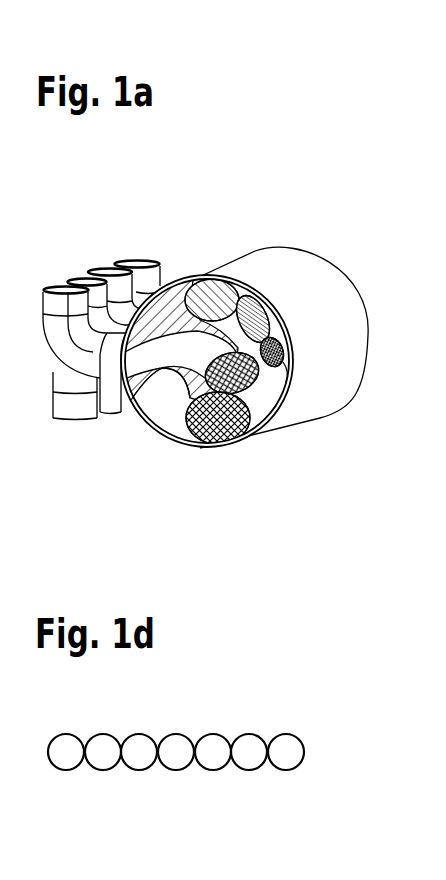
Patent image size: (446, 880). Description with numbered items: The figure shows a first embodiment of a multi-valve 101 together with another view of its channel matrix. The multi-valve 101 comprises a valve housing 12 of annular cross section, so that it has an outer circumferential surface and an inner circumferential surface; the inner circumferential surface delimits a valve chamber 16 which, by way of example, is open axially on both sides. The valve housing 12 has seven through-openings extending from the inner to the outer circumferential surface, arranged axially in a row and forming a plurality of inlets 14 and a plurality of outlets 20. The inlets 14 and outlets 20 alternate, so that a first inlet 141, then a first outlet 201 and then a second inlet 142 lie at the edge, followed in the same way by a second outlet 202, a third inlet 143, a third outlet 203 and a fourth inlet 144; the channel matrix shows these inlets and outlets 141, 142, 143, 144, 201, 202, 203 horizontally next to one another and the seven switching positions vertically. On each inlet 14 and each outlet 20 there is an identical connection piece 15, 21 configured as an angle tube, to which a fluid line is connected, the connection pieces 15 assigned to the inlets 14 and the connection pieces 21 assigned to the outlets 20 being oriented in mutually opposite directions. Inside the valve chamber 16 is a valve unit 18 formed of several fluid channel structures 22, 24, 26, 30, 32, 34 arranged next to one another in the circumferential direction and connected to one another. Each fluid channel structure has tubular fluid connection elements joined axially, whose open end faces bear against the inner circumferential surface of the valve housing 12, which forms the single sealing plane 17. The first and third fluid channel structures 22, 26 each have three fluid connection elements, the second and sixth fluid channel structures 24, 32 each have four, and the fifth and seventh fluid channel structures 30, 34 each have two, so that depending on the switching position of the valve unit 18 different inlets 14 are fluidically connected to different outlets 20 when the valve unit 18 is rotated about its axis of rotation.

In FIG. 1A, the multi-valve 101 is at (338, 227).
In FIG. 1A, the valve housing 12 is at (322, 283).
In FIG. 1A, the inlet 14 is at (114, 412).
In FIG. 1A, the connection piece 15 is at (60, 284).
In FIG. 1A, the valve chamber 16 is at (249, 333).
In FIG. 1A, the sealing plane 17 is at (165, 412).
In FIG. 1A, the valve unit 18 is at (249, 339).
In FIG. 1A, the outlet 20 is at (117, 262).
In FIG. 1A, the connection piece 21 is at (75, 400).
In FIG. 1A, the first fluid channel structure 22 is at (292, 386).
In FIG. 1A, the second fluid channel structure 24 is at (290, 370).
In FIG. 1A, the third fluid channel structure 26 is at (200, 292).
In FIG. 1A, the fifth fluid channel structure 30 is at (170, 316).
In FIG. 1A, the sixth fluid channel structure 32 is at (207, 443).
In FIG. 1A, the seventh fluid channel structure 34 is at (268, 402).
In FIG. 1D, the first inlet 141 is at (65, 748).
In FIG. 1D, the second inlet 142 is at (140, 748).
In FIG. 1D, the third inlet 143 is at (212, 748).
In FIG. 1D, the fourth inlet 144 is at (285, 748).
In FIG. 1D, the first outlet 201 is at (103, 757).
In FIG. 1D, the second outlet 202 is at (175, 757).
In FIG. 1D, the third outlet 203 is at (247, 757).